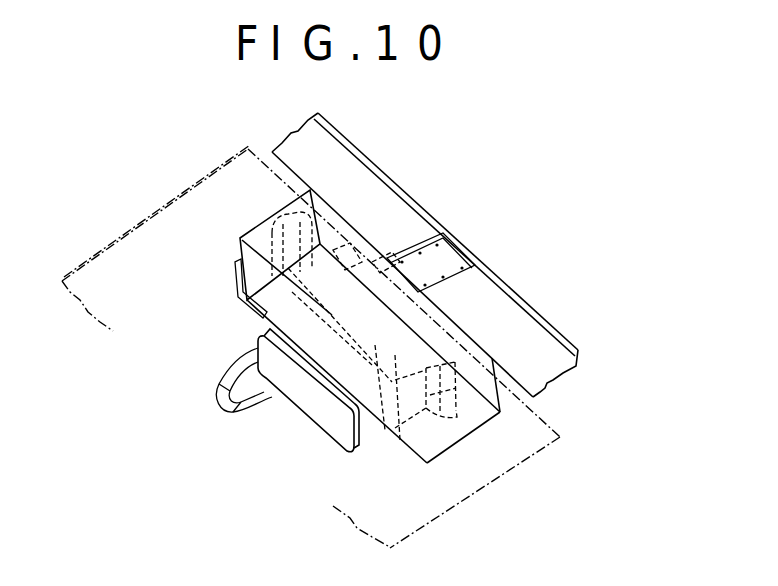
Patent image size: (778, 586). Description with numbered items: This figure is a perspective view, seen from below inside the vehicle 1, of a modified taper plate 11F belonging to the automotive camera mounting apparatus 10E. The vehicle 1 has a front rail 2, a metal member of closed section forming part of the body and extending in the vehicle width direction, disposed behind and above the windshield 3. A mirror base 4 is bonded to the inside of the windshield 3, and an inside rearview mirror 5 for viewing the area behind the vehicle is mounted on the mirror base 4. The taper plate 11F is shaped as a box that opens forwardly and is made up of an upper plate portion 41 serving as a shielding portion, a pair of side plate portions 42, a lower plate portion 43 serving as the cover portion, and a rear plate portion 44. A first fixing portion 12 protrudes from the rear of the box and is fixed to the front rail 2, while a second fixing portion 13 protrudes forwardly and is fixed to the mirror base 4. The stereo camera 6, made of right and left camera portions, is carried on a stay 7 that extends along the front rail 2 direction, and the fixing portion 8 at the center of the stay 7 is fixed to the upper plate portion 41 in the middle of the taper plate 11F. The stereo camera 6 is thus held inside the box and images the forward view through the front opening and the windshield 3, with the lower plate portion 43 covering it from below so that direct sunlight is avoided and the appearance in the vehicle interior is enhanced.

The vehicle 1 is at (108, 132).
The front rail 2 is at (545, 381).
The windshield 3 is at (140, 253).
The mirror base 4 is at (220, 407).
The inside rearview mirror 5 is at (305, 412).
The stereo camera 6 is at (463, 435).
The stay 7 is at (392, 428).
The fixing portion 8 is at (420, 300).
The end portion 10E is at (395, 242).
The taper plate 11F is at (455, 323).
The first fixing portion 12 is at (452, 253).
The second fixing portion 13 is at (270, 331).
The upper plate portion 41 is at (340, 210).
The side plate portions 42 is at (267, 230).
The lower plate portion 43 is at (437, 450).
The rear plate portion 44 is at (503, 408).